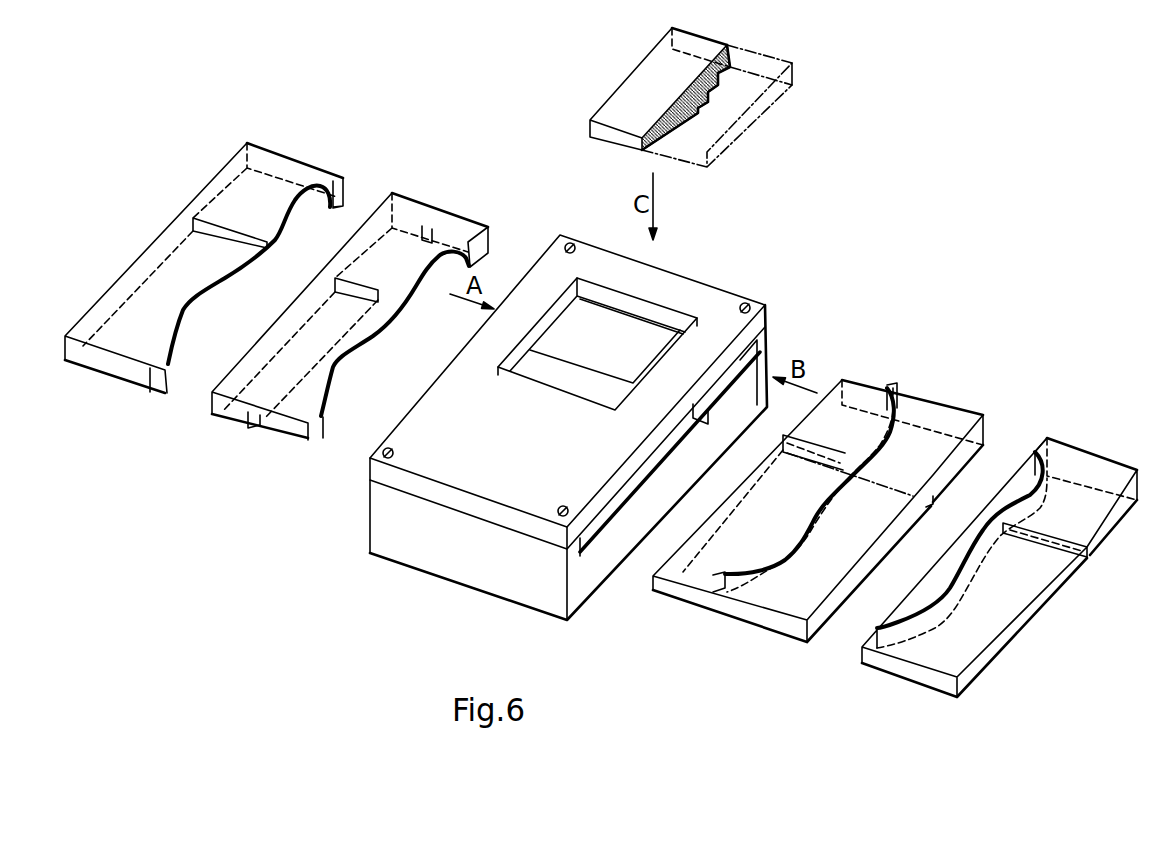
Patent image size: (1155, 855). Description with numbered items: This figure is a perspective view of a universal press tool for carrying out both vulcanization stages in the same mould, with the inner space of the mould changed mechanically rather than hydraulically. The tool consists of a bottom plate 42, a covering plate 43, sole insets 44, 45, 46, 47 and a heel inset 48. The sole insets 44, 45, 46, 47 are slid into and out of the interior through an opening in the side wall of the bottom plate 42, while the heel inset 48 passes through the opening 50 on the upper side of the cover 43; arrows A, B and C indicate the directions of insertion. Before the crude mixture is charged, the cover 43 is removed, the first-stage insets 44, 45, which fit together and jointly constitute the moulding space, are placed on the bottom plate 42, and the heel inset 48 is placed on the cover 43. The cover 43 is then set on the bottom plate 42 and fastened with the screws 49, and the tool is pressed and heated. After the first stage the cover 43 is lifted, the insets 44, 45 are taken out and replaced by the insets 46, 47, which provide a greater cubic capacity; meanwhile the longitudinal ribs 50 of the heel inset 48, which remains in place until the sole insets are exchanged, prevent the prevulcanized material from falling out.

The bottom plate 42 is at (450, 537).
The covering plate 43 is at (425, 425).
The sole inset 44 is at (858, 402).
The sole inset 45 is at (433, 220).
The sole inset 46 is at (1082, 472).
The sole inset 47 is at (285, 172).
The heel inset 48 is at (632, 86).
The screws 49 is at (382, 458).
The opening / longitudinal ribs 50 is at (617, 328).